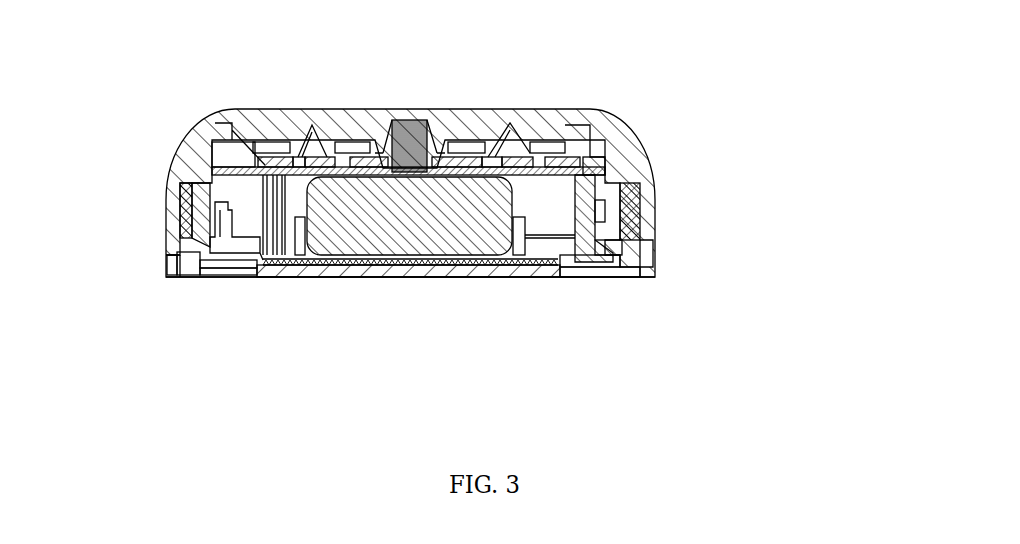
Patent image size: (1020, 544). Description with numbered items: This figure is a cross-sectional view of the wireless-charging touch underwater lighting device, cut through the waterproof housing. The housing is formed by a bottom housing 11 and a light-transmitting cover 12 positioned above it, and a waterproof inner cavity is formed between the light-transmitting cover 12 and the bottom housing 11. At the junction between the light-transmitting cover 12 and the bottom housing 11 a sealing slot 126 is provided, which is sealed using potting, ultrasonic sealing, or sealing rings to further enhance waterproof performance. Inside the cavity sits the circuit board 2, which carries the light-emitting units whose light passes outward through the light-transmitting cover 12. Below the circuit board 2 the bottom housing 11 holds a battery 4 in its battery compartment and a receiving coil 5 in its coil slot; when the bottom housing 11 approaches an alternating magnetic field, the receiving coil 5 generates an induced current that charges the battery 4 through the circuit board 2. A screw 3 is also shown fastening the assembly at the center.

The circuit board 2 is at (255, 168).
The screw 3 is at (397, 120).
The battery 4 is at (390, 210).
The receiving coil 5 is at (430, 265).
The bottom housing 11 is at (507, 275).
The light-transmitting cover 12 is at (538, 130).
The sealing slot 126 is at (645, 226).